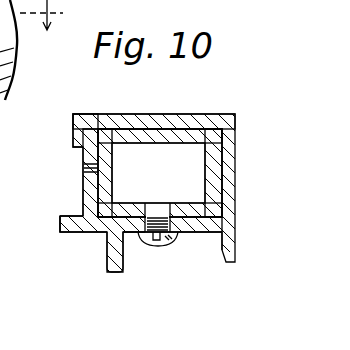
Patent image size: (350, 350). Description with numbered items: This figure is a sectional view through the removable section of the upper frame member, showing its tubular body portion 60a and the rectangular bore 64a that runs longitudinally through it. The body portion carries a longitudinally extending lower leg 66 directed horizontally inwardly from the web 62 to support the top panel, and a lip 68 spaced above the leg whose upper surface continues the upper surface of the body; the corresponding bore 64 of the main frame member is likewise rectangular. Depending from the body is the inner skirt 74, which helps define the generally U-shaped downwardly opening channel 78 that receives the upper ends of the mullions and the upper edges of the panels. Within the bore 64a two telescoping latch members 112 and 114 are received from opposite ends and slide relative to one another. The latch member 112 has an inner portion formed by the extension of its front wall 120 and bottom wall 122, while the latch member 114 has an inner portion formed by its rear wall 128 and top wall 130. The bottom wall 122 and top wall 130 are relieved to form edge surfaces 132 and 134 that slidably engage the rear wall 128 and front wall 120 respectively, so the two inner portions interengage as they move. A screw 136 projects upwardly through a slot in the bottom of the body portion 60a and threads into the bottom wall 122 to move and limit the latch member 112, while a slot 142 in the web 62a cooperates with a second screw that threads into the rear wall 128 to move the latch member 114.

The tubular body portion 60a is at (175, 198).
The lip 68 is at (73, 130).
The latch member 114 is at (122, 132).
The top wall 130 is at (160, 128).
The edge surface 134 is at (175, 195).
The bore 64a is at (177, 172).
The front wall 120 is at (213, 190).
The latch member 112 is at (197, 215).
The screw 136 is at (163, 255).
The channel 78 is at (150, 248).
The bottom wall 122 is at (133, 234).
The inner skirt 74 is at (112, 260).
The edge surface 132 is at (97, 236).
The lower leg 66 is at (68, 234).
The bore 64 is at (3, 238).
The rear wall 128 is at (105, 198).
The slot 142 is at (84, 177).
The web 62a is at (83, 160).
The web 62 is at (0, 40).